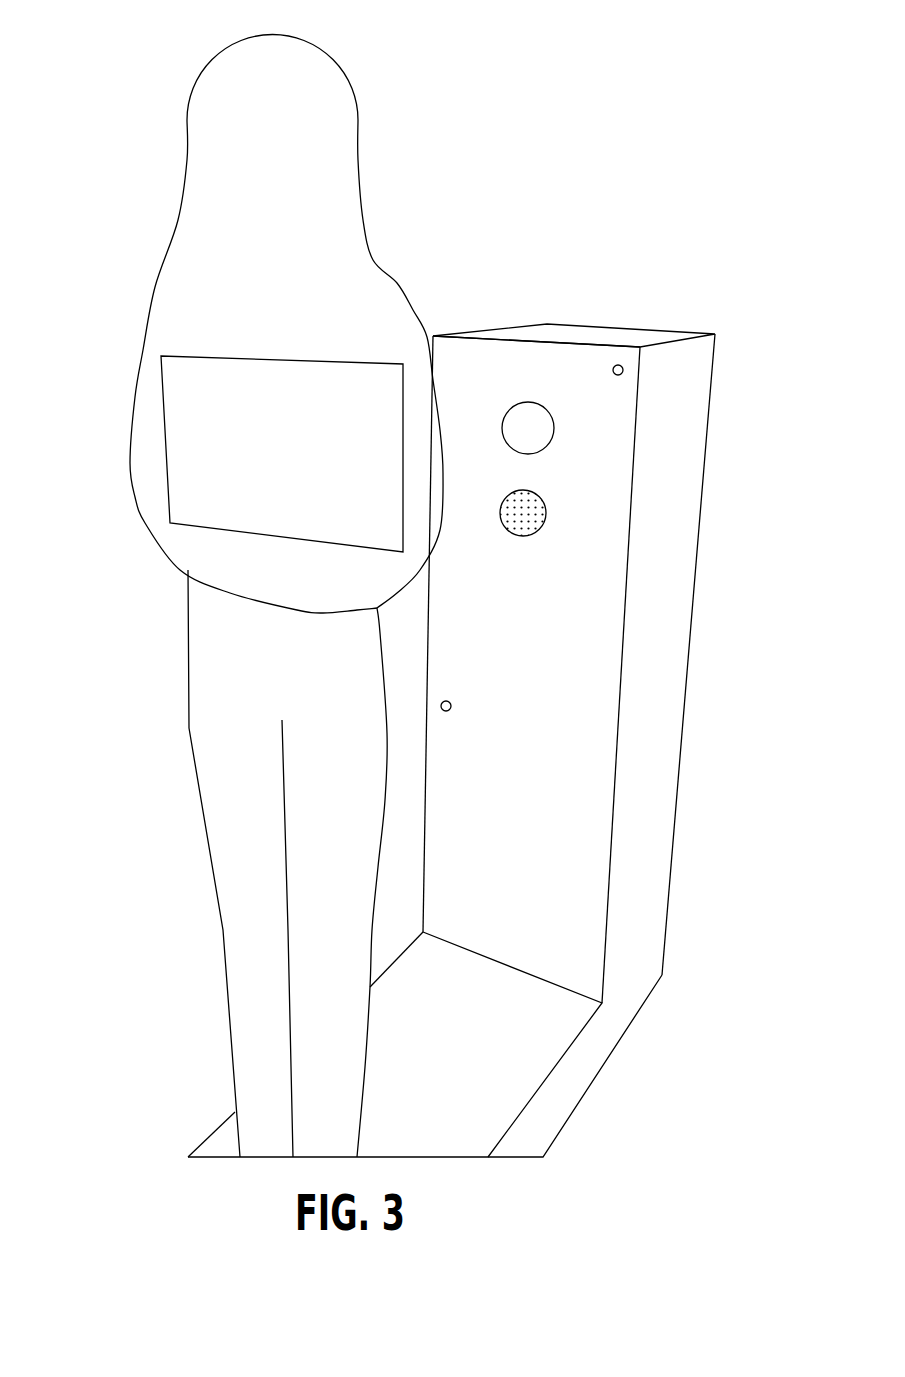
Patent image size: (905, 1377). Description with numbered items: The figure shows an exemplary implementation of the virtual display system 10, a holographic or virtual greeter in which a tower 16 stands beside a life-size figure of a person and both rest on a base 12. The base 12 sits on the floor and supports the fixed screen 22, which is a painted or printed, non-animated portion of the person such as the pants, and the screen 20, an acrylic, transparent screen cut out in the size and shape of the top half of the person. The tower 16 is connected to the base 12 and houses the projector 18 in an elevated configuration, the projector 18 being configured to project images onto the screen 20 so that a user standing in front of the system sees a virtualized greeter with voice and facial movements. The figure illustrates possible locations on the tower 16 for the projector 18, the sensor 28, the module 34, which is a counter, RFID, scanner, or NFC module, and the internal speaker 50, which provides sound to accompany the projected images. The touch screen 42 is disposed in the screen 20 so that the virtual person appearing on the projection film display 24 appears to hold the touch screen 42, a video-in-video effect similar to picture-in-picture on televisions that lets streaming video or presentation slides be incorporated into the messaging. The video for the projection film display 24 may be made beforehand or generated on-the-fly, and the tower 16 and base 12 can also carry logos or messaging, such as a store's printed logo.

The virtual display system 10 is at (433, 88).
The base 12 is at (572, 1110).
The tower 16 is at (695, 610).
The projector 18 is at (543, 402).
The screen 20 is at (140, 513).
The fixed screen 22 is at (207, 840).
The projection film display 24 is at (286, 324).
The sensor 28 is at (621, 363).
The counter/RFID/scanner/NFC module 34 is at (451, 710).
The second touch screen 42 is at (163, 427).
The internal speaker 50 is at (547, 517).